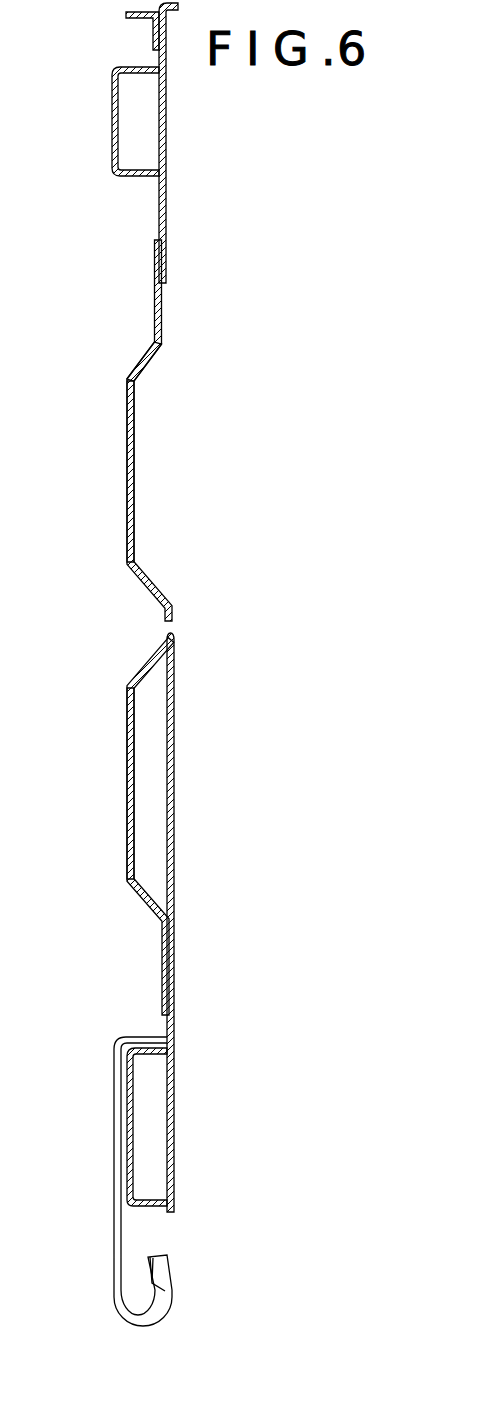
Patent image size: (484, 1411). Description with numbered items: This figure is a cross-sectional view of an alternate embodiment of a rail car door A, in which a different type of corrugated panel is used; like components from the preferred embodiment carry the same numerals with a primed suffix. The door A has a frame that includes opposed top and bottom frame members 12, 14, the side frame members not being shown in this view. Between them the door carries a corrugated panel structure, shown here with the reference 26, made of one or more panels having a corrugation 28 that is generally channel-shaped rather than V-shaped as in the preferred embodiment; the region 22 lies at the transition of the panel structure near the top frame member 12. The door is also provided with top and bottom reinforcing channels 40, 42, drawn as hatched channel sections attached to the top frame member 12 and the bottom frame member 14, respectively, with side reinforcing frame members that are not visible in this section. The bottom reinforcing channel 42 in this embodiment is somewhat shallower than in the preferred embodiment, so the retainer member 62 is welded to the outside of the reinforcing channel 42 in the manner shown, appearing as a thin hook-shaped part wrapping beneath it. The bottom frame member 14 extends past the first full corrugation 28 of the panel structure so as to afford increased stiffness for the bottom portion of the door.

The top frame member 12 is at (167, 220).
The top reinforcing channel 40 is at (112, 123).
The door A is at (177, 306).
The offset bend 22 is at (123, 359).
The corrugation 28 is at (137, 523).
The intermediate connector 26 is at (116, 799).
The bottom frame member 14 is at (175, 1130).
The bottom reinforcing channel 42 is at (131, 1110).
The retainer member 62 is at (116, 1178).